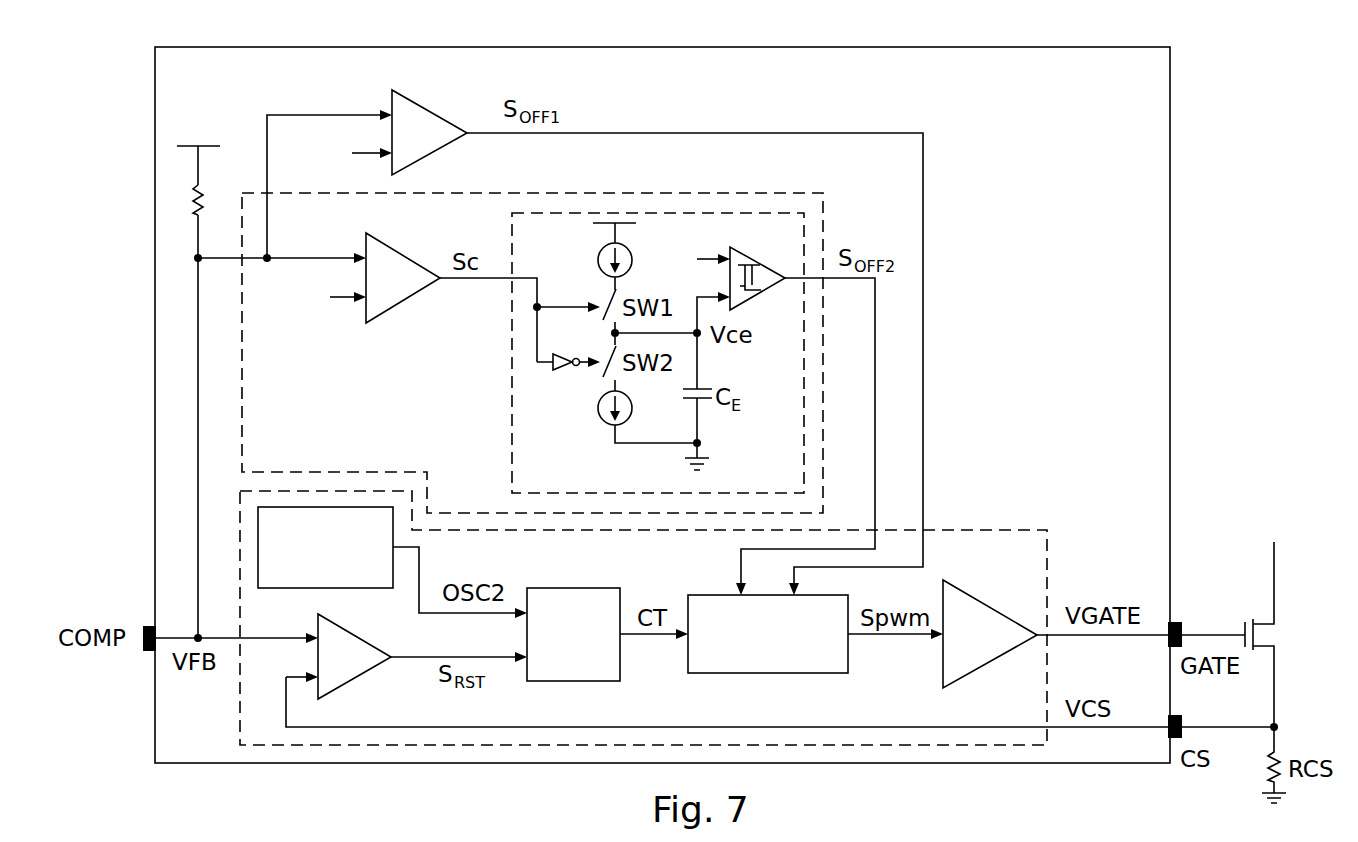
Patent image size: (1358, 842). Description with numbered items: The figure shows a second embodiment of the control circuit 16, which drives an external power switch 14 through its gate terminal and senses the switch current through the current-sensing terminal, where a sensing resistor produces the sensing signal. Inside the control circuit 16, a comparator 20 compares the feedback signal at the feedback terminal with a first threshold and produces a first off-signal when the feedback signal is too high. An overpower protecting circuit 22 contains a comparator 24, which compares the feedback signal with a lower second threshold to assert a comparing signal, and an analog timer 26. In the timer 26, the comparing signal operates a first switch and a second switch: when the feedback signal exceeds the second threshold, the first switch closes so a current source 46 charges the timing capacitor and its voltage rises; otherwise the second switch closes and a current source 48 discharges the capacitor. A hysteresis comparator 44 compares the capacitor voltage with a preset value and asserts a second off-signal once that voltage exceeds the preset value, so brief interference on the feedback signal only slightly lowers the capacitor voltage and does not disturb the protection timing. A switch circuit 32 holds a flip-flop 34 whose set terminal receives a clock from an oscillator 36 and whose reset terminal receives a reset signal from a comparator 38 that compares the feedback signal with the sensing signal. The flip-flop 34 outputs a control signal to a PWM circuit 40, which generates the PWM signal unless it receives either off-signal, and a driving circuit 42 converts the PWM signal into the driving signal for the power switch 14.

The power switch 14 is at (1280, 631).
The control circuit 16 is at (1170, 206).
The comparator 20 is at (432, 103).
The overpower protecting circuit 22 is at (823, 213).
The comparator 24 is at (408, 248).
The timer 26 is at (512, 335).
The switch circuit 32 is at (968, 530).
The flip-flop 34 is at (620, 663).
The oscillator 36 is at (356, 588).
The comparator 38 is at (355, 681).
The pulse width modulation (PWM) circuit 40 is at (848, 656).
The driving circuit 42 is at (990, 608).
The hysteresis comparator 44 is at (760, 295).
The current source 46 is at (598, 255).
The current source 48 is at (602, 424).